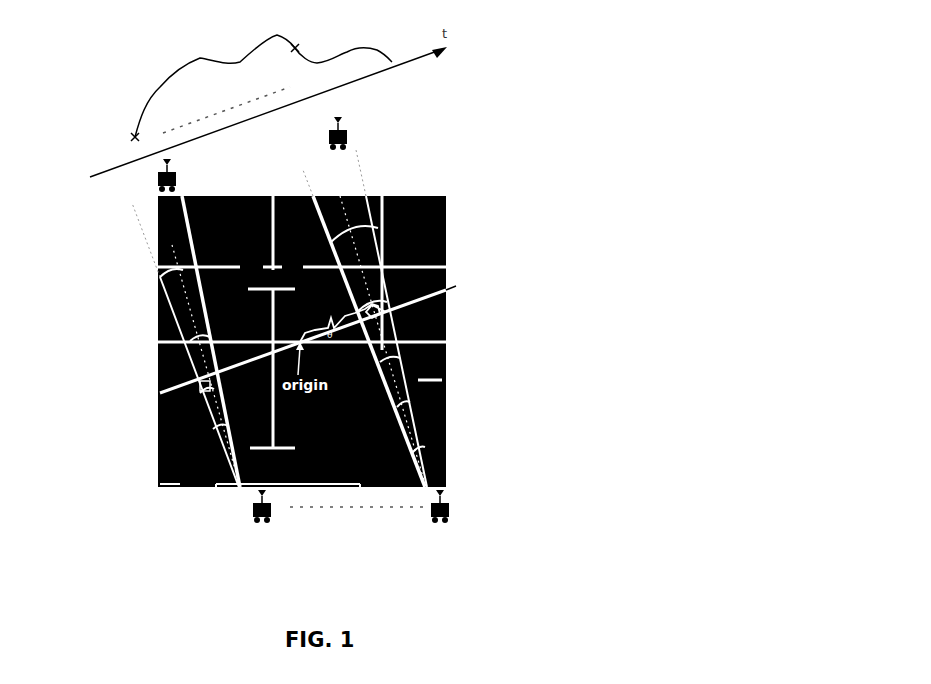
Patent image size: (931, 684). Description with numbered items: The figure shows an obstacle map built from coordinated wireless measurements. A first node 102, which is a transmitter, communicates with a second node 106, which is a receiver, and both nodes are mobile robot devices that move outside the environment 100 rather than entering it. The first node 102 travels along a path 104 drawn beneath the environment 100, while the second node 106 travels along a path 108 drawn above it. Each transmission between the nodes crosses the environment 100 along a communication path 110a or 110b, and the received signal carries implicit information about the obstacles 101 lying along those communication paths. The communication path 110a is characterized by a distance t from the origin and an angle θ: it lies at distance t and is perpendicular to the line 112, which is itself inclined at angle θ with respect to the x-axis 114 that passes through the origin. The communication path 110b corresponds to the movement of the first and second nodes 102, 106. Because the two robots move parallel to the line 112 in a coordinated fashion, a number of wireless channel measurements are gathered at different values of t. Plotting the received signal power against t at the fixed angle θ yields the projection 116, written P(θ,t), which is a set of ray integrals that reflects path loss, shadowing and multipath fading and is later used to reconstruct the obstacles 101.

The environment 100 is at (445, 228).
The obstacles 101 is at (380, 195).
The first node 102 is at (253, 512).
The path 104 is at (328, 508).
The second node 106 is at (157, 183).
The path 108 is at (228, 108).
The communication path 110a is at (332, 170).
The communication path 110b is at (157, 215).
The line 112 is at (458, 280).
The x-axis 114 is at (458, 342).
The projection 116 is at (165, 80).